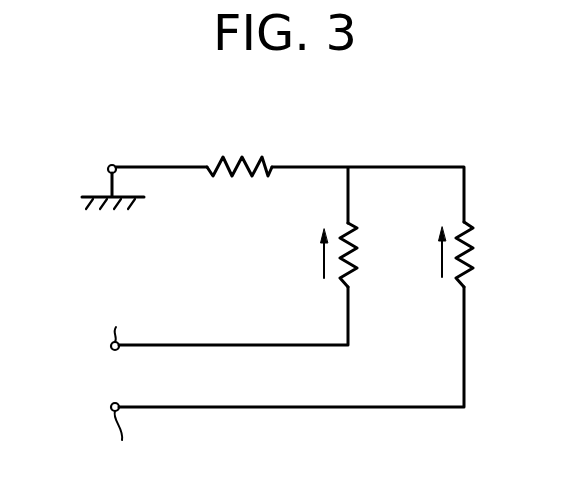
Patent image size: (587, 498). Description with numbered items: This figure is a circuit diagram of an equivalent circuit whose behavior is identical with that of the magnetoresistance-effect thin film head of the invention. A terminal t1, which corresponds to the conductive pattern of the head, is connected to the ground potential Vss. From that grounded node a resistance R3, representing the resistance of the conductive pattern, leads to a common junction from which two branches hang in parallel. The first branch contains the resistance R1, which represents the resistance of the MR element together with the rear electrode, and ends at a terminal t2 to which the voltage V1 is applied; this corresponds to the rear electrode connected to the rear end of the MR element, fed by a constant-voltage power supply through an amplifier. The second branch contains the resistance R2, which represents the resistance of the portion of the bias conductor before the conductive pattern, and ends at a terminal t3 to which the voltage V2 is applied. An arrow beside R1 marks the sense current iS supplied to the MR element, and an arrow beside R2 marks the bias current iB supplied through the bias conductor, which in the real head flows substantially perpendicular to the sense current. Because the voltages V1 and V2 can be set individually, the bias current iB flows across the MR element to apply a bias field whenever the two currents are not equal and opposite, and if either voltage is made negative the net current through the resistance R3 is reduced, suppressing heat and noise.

The terminal t1 is at (112, 164).
The terminal t2 is at (118, 320).
The terminal t3 is at (123, 440).
The ground potential Vss is at (87, 194).
The voltage V1 is at (95, 350).
The voltage V2 is at (95, 412).
The resistance R1 is at (365, 255).
The resistance R2 is at (481, 254).
The resistance R3 is at (239, 151).
The sense current iS is at (313, 253).
The bias current iB is at (432, 252).